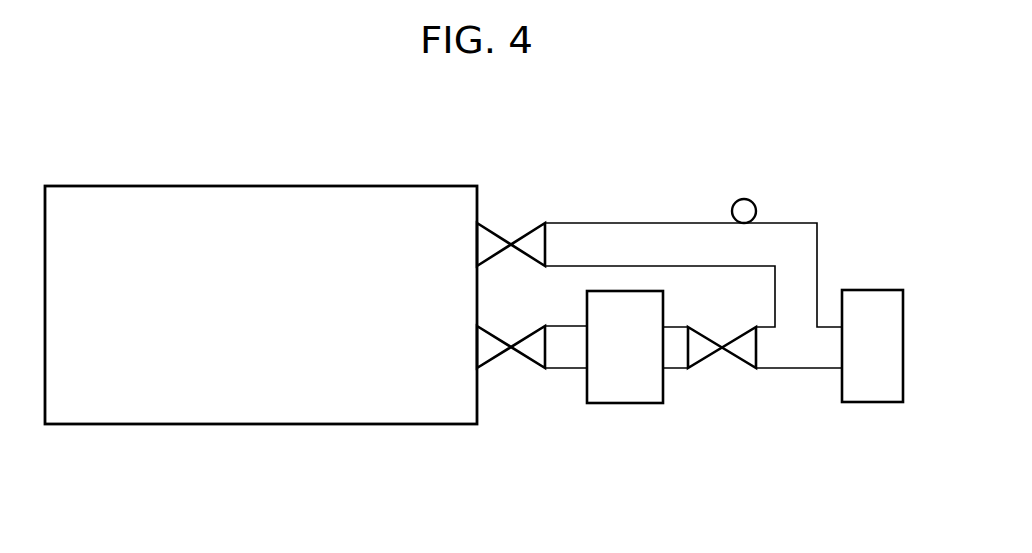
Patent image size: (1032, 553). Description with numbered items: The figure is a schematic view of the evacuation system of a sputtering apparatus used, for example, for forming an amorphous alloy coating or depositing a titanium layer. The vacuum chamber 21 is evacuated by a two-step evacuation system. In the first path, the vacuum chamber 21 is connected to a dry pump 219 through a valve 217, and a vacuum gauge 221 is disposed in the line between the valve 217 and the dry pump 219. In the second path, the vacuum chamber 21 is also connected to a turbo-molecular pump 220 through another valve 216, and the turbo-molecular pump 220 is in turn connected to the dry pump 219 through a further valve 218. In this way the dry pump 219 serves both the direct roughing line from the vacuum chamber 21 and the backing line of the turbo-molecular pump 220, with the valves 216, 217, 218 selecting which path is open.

The vacuum chamber 21 is at (342, 424).
The valve 216 is at (536, 370).
The valve 217 is at (524, 228).
The valve 218 is at (713, 370).
The dry pump 219 is at (868, 402).
The turbo-molecular pump 220 is at (631, 403).
The vacuum gauge 221 is at (749, 199).